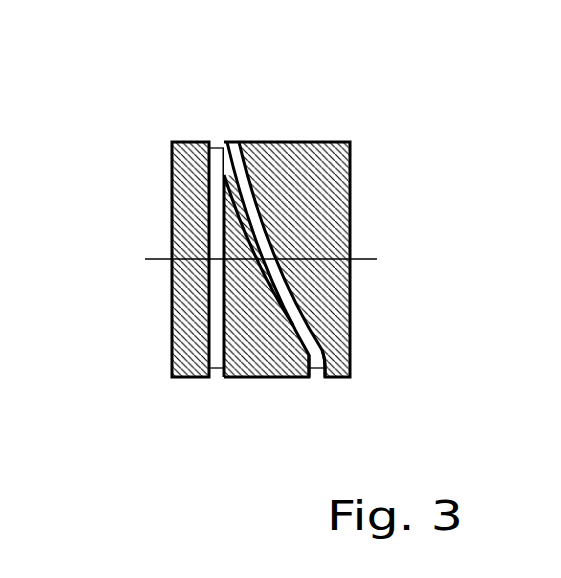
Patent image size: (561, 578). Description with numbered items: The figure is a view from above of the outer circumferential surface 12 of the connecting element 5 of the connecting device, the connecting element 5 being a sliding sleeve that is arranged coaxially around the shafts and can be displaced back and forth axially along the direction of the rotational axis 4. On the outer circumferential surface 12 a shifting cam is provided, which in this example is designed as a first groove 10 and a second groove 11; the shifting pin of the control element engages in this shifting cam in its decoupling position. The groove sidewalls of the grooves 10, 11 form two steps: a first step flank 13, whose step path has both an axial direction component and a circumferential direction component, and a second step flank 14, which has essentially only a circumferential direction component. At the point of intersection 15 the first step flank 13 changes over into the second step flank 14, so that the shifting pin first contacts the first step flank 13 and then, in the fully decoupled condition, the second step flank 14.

The rotational axis 4 is at (360, 258).
The connecting element 5 is at (289, 133).
The first groove 10 is at (252, 202).
The second groove 11 is at (213, 360).
The outer circumferential surface 12 is at (323, 146).
The first step flank 13 is at (260, 228).
The second step flank 14 is at (221, 313).
The point of intersection 15 is at (221, 138).